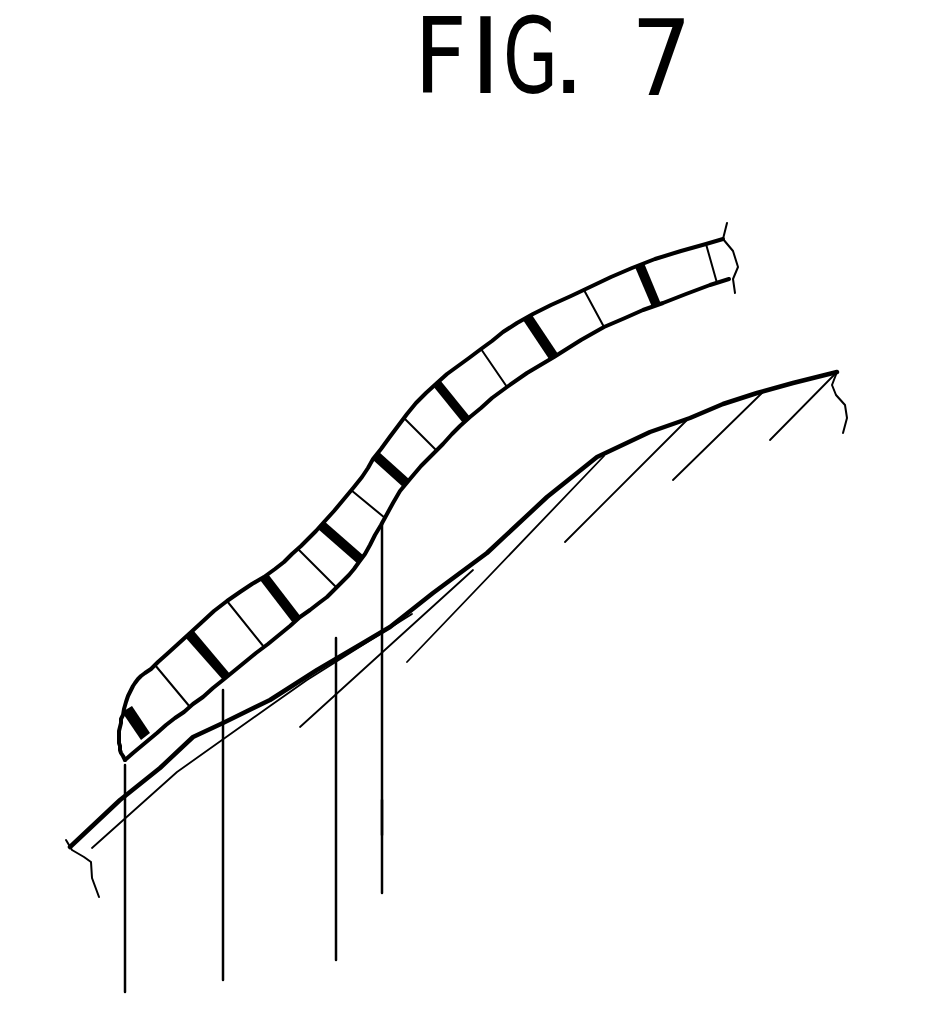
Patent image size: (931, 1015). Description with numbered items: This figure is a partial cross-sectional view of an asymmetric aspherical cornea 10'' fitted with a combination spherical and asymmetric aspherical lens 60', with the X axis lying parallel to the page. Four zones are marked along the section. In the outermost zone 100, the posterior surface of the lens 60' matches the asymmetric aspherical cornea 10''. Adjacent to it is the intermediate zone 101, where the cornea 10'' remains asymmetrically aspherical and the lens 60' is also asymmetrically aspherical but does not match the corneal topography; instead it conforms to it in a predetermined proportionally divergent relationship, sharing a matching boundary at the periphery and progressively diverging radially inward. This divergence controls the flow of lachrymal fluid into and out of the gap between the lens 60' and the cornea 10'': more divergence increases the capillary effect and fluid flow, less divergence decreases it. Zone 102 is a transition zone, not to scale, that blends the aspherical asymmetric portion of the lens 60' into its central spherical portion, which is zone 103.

The combination spherical and asymmetric aspherical lens 60' is at (428, 491).
The asymmetric aspherical cornea 10'' is at (456, 615).
The zone 100 is at (273, 968).
The intermediate zone 101 is at (405, 914).
The transition zone 102 is at (293, 872).
The zone 103 is at (397, 817).